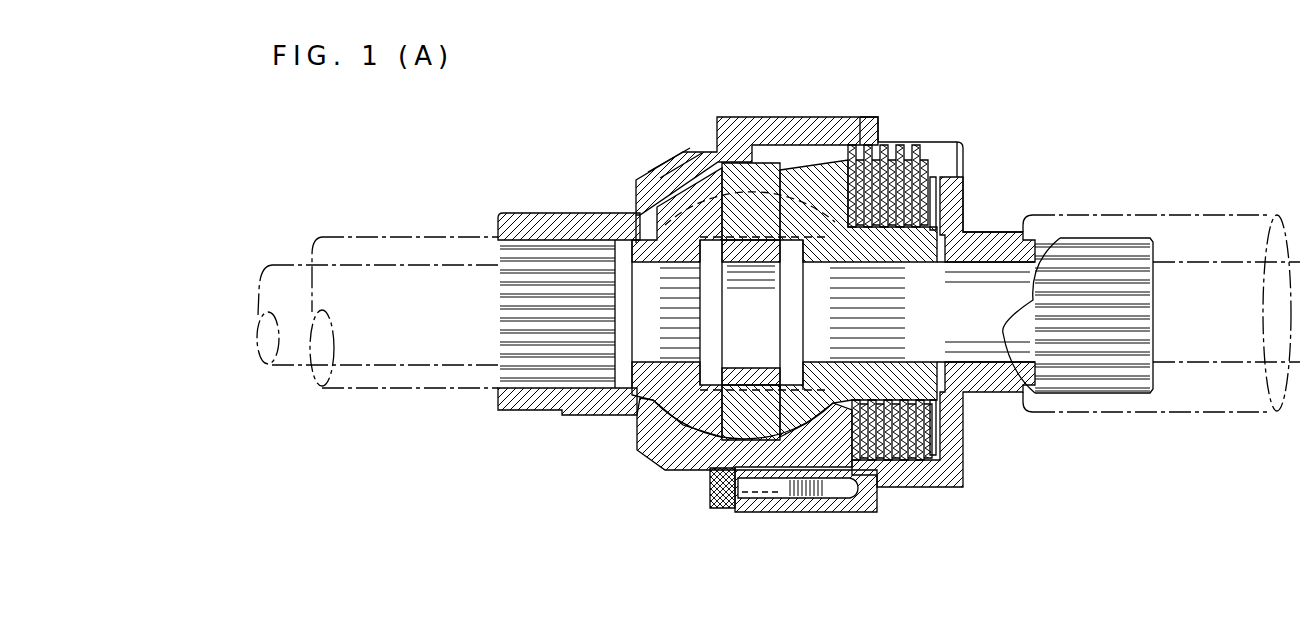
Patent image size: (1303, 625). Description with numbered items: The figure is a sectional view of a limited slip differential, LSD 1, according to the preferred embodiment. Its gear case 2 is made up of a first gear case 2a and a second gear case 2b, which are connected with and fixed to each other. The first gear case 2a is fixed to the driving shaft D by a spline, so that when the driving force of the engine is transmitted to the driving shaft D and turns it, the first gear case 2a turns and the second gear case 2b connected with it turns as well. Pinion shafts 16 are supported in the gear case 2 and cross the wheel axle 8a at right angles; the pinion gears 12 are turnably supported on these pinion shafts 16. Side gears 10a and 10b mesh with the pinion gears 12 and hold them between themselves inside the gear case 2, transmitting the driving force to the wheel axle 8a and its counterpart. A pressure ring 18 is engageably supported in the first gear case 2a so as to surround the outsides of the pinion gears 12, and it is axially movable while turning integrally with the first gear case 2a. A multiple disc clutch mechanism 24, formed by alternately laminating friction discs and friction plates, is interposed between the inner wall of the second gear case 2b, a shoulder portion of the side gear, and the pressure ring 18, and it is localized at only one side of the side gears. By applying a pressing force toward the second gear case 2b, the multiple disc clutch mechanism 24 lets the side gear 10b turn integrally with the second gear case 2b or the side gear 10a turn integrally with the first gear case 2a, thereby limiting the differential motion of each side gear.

The LSD 1 is at (963, 120).
The gear case 2 is at (777, 519).
The first gear case 2a is at (655, 172).
The second gear case 2b is at (950, 483).
The wheel axle 8a is at (295, 355).
The driving shaft D is at (400, 236).
The side gear 10a is at (670, 397).
The side gear 10b is at (822, 258).
The pinion gear 12 is at (710, 187).
The pinion shaft 16 is at (683, 478).
The pressure ring 18 is at (836, 160).
The multiple disc clutch mechanism 24 is at (933, 430).